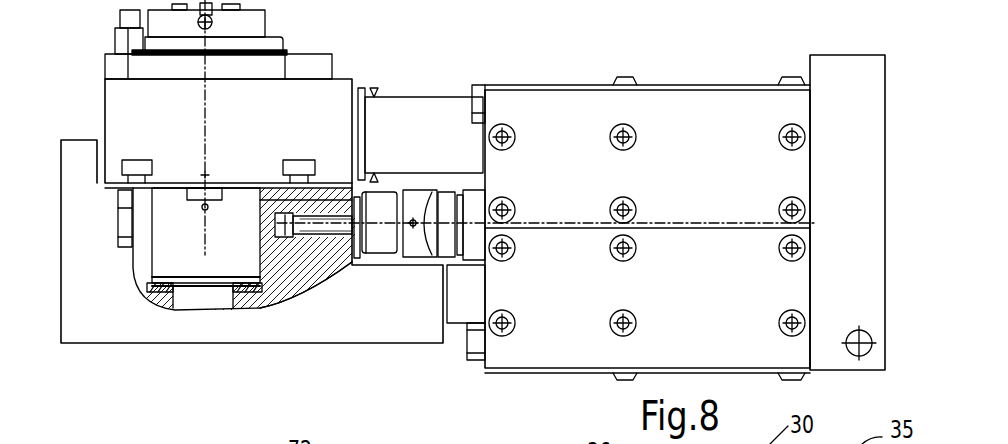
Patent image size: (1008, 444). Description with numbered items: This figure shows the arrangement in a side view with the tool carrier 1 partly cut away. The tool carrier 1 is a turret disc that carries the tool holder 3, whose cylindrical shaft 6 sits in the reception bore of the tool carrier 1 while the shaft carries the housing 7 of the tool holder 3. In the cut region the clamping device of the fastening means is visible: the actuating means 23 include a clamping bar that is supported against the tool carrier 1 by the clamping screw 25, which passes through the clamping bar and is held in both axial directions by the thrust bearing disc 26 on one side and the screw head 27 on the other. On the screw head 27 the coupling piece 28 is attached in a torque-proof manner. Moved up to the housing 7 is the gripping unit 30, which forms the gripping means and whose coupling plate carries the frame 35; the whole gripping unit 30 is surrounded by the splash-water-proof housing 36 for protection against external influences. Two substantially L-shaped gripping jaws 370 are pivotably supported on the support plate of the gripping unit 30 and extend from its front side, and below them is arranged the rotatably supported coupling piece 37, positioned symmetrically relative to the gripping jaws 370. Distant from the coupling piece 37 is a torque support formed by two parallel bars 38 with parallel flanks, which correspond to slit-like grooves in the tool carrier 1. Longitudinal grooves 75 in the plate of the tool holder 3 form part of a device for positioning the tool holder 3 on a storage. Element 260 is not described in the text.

The tool carrier 1 is at (87, 258).
The tool holder 3 is at (103, 103).
The cylindrical shaft 6 is at (175, 257).
The housing 7 is at (330, 102).
The actuating means 23 is at (375, 242).
The clamping screw 25 is at (318, 228).
The thrust bearing disc 26 is at (350, 263).
The screw head 27 is at (425, 205).
The coupling piece 28 is at (470, 118).
The gripping unit 30 is at (732, 82).
The frame 35 is at (843, 78).
The housing 36 is at (568, 113).
The coupling piece 37 is at (468, 207).
The bars 38 is at (460, 315).
The longitudinal grooves 75 is at (365, 98).
The stop face 260 is at (317, 253).
The gripping jaws 370 is at (388, 122).